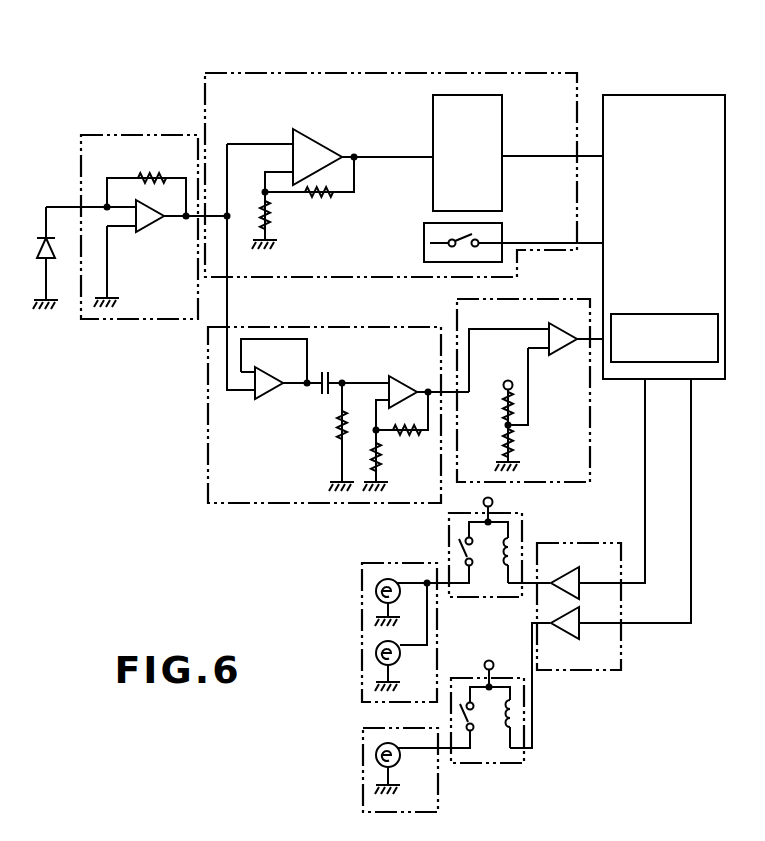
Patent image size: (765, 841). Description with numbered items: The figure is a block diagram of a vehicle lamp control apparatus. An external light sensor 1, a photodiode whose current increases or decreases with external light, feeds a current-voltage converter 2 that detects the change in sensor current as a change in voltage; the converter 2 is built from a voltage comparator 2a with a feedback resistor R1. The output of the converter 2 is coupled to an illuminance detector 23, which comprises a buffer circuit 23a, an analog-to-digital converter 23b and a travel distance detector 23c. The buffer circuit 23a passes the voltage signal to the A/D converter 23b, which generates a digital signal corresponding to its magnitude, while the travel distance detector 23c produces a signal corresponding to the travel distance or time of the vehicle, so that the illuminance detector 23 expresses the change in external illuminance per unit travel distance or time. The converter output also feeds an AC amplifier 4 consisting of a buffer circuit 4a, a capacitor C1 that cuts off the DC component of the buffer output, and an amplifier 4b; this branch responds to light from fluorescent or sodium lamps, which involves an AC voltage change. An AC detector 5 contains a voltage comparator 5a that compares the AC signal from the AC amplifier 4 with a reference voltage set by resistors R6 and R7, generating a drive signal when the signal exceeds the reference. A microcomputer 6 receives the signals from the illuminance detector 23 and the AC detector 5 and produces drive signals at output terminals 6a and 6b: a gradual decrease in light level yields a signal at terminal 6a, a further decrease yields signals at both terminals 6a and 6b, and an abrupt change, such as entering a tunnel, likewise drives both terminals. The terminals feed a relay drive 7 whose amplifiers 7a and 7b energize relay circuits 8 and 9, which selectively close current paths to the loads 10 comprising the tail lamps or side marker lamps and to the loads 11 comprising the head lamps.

The external light sensor 1 is at (62, 240).
The current-voltage converter 2 is at (154, 204).
The voltage comparator 2a is at (158, 230).
The resistor R1 is at (152, 166).
The illuminance detector 23 is at (404, 203).
The buffer circuit 23a is at (322, 143).
The analog-to-digital converter 23b is at (502, 125).
The travel distance detector 23c is at (424, 240).
The AC amplifier 4 is at (312, 415).
The buffer circuit 4a is at (273, 398).
The amplifier 4b is at (398, 377).
The capacitor C1 is at (350, 418).
The AC detector 5 is at (530, 371).
The voltage comparator 5a is at (552, 355).
The resistor R6 is at (493, 407).
The resistor R7 is at (520, 448).
The microcomputer 6 is at (652, 337).
The output terminal 6a is at (645, 420).
The output terminal 6b is at (691, 420).
The relay drive 7 is at (588, 645).
The relay drive amplifier 7a is at (579, 570).
The relay drive amplifier 7b is at (576, 636).
The relay circuit 8 is at (522, 513).
The relay circuit 9 is at (478, 763).
The loads 10 is at (362, 614).
The loads 11 is at (363, 772).